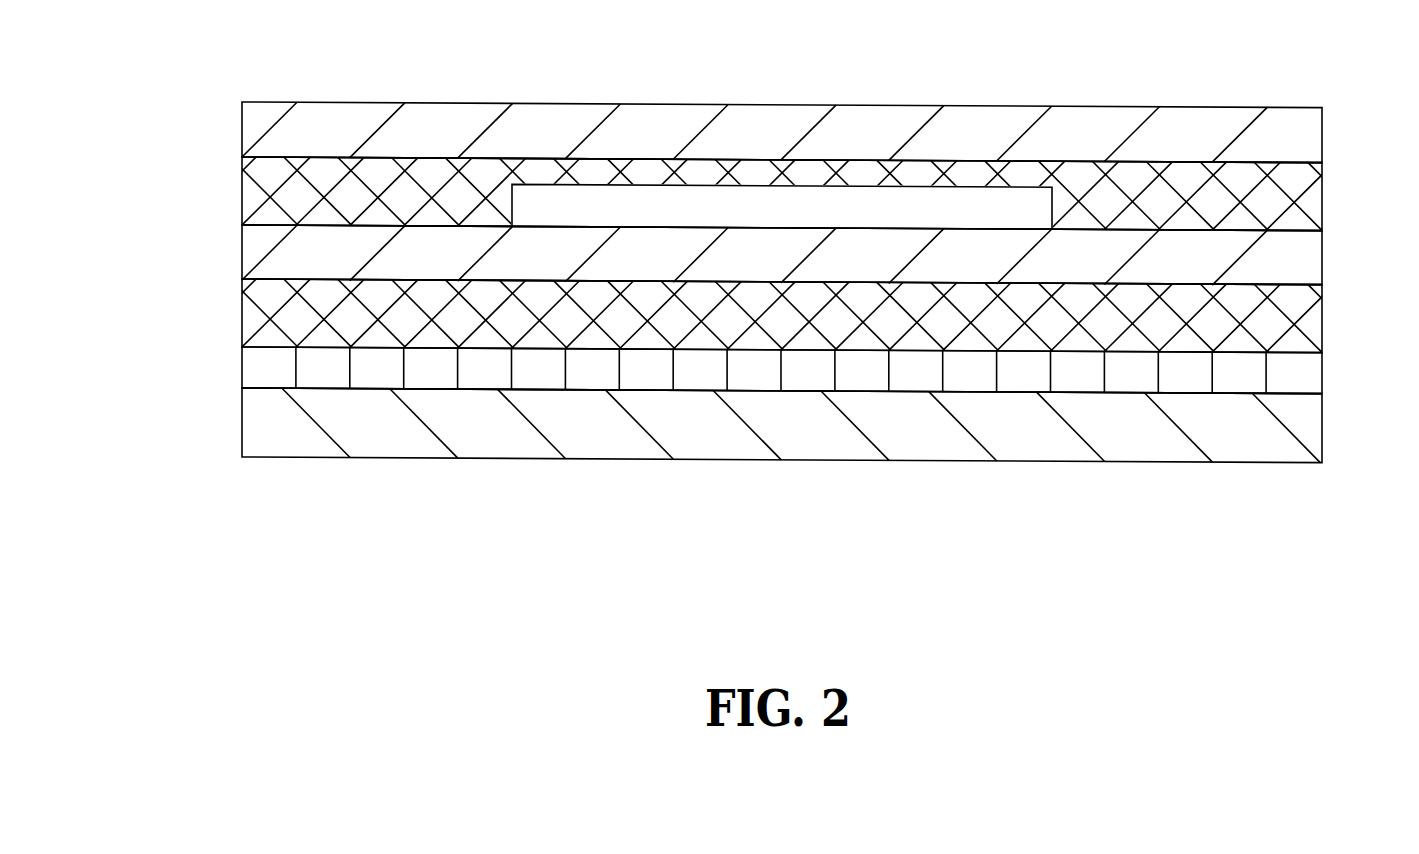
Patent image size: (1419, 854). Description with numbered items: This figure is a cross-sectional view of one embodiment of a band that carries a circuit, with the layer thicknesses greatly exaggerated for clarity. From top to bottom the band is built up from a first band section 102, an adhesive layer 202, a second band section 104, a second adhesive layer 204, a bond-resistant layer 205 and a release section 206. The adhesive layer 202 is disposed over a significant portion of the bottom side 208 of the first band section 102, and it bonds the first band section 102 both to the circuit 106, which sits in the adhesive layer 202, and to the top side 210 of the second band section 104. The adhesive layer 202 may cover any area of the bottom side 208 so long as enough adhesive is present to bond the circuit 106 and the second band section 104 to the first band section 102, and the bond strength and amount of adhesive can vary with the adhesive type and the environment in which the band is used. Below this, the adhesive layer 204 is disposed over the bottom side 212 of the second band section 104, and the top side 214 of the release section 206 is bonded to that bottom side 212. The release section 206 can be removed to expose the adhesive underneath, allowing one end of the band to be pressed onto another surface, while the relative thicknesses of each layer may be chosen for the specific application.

The first band section 102 is at (826, 132).
The adhesive layer 202 is at (803, 195).
The second band section 104 is at (826, 255).
The adhesive layer 204 is at (803, 316).
The bond-resistant layer 205 is at (826, 370).
The release section 206 is at (826, 425).
The circuit 106 is at (917, 206).
The bottom side 208 is at (287, 158).
The top side 210 is at (347, 225).
The bottom side 212 is at (377, 279).
The top side 214 is at (592, 388).